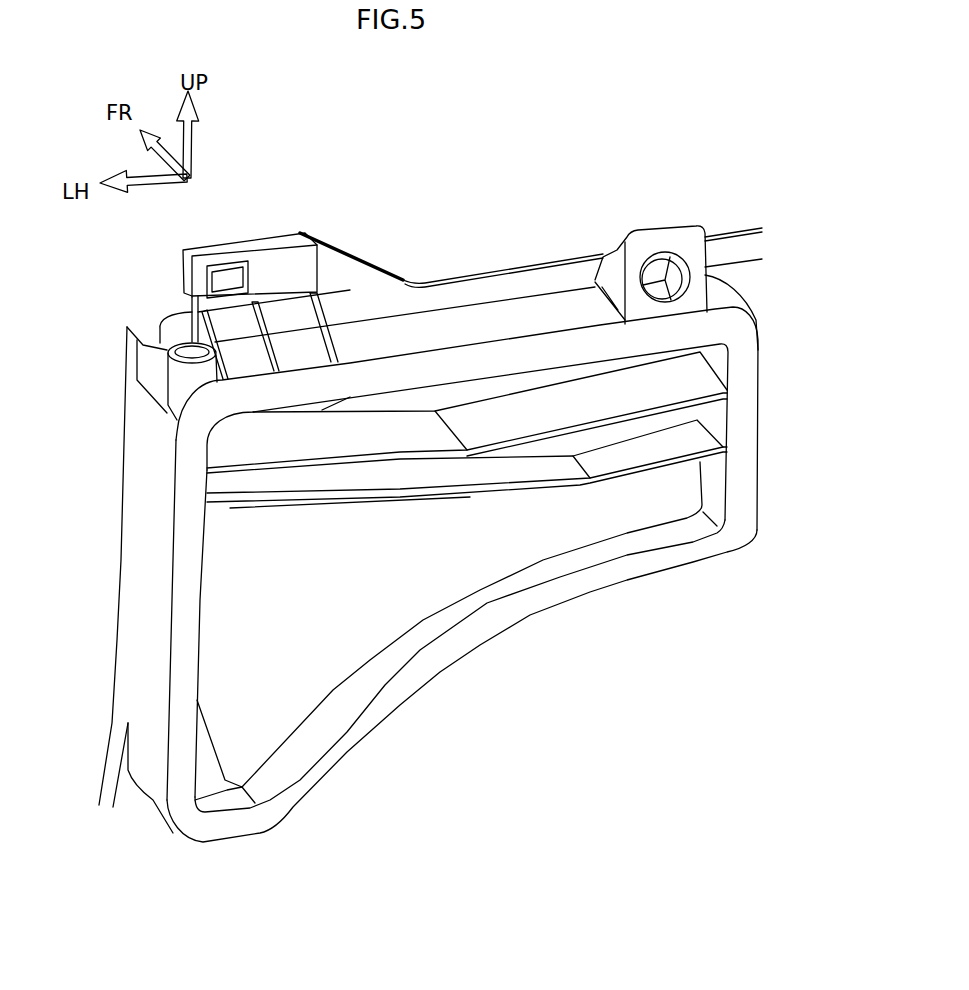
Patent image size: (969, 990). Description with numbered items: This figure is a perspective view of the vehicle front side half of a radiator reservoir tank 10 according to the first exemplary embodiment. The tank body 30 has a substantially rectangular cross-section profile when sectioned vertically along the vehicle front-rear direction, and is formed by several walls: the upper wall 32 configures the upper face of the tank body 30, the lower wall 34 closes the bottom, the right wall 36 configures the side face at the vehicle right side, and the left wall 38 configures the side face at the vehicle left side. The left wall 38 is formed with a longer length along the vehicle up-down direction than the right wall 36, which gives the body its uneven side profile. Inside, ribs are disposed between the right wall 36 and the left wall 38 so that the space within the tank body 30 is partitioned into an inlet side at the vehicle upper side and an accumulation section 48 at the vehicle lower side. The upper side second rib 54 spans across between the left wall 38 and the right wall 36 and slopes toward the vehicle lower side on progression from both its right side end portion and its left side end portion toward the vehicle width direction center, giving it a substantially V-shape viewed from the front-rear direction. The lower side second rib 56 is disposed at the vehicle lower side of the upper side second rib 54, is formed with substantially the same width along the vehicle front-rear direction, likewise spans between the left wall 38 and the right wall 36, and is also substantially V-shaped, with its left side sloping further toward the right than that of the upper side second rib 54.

The vehicle interior trim / garnish 10 is at (414, 463).
The tank body 30 is at (583, 217).
The upper wall 32 is at (373, 330).
The lower wall 34 is at (418, 643).
The right wall 36 is at (760, 447).
The left wall 38 is at (137, 510).
The accumulation section 48 is at (278, 646).
The upper side second rib 54 is at (476, 398).
The lower side second rib 56 is at (391, 505).